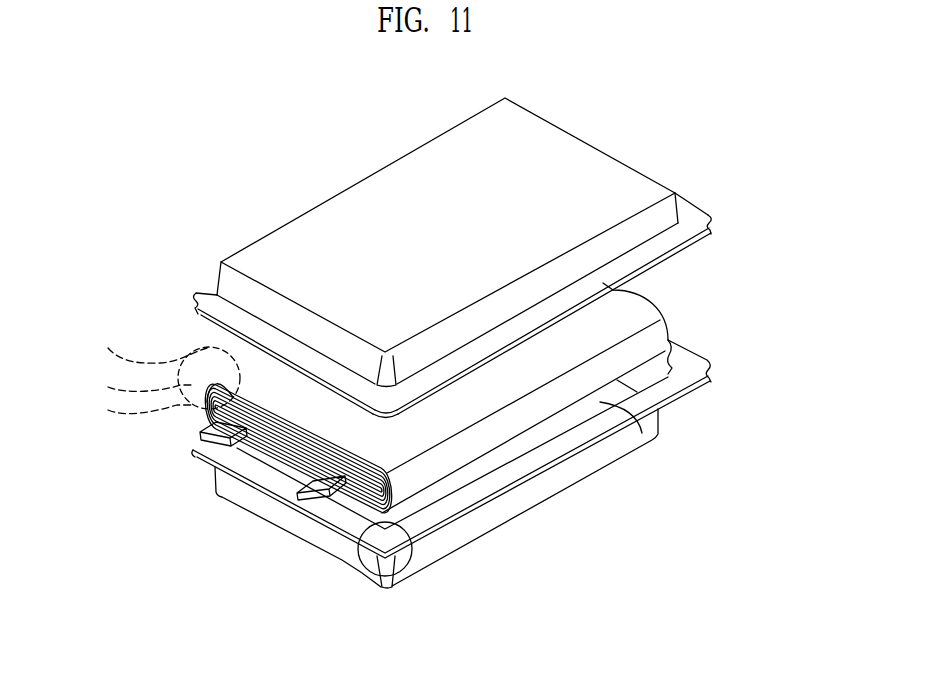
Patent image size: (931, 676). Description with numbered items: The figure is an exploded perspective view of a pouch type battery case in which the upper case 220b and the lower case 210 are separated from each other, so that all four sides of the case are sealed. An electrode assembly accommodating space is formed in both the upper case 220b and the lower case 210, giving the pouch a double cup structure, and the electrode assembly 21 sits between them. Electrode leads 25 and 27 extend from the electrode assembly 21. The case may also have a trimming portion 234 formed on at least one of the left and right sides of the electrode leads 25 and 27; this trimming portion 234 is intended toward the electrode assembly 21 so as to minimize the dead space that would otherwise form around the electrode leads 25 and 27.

The electrode assembly 21 is at (77, 343).
The electrode lead 25 is at (194, 448).
The electrode lead 27 is at (310, 494).
The case 210 is at (587, 480).
The upper case 220b is at (715, 218).
The trimming portion 234 is at (410, 560).